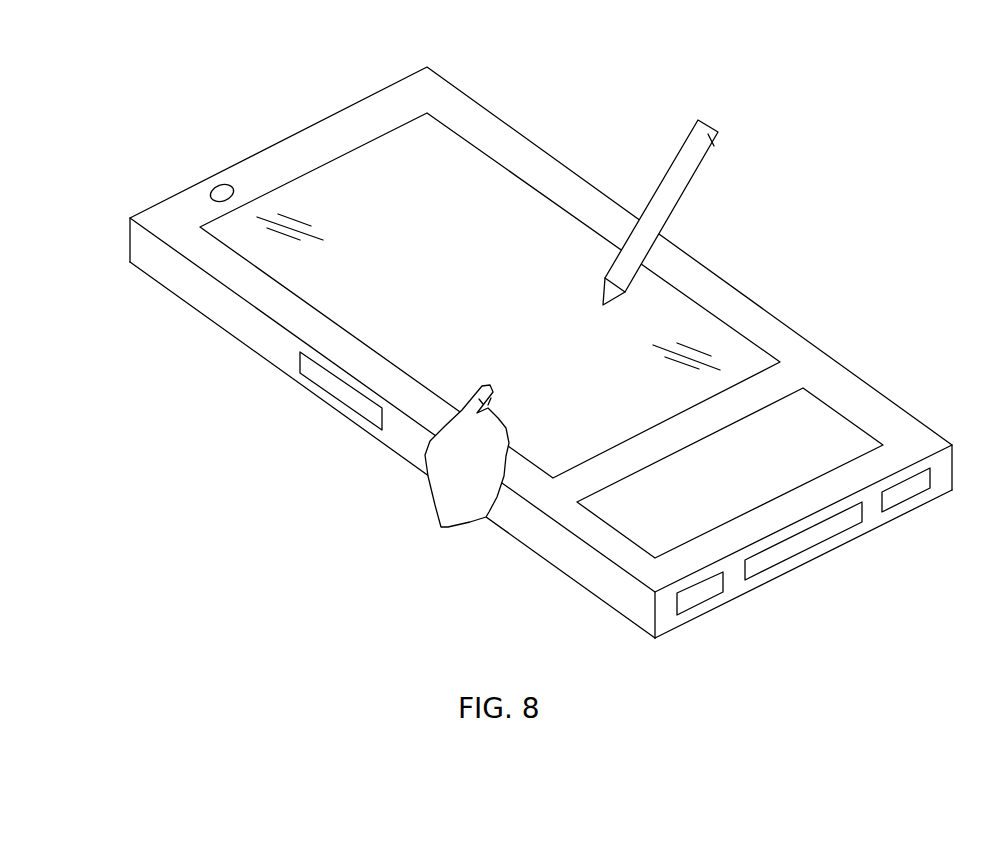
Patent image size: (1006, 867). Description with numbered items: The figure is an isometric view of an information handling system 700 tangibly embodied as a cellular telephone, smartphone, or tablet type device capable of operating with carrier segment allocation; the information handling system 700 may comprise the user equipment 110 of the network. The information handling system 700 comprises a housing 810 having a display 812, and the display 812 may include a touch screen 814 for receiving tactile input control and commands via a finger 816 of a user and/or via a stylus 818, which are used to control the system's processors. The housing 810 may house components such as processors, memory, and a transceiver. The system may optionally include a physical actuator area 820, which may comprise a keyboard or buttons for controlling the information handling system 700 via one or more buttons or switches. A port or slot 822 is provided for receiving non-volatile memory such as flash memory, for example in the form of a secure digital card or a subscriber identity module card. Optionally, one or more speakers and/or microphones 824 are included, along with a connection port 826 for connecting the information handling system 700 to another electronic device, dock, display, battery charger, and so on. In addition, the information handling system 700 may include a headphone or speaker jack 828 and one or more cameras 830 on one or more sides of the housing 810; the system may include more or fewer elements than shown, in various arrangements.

The user equipment 110 is at (556, 92).
The information handling system 700 is at (522, 338).
The housing 810 is at (372, 93).
The display 812 is at (428, 172).
The touch screen 814 is at (514, 292).
The finger 816 is at (483, 386).
The stylus 818 is at (679, 152).
The physical actuator area 820 is at (813, 433).
The port or slot 822 is at (320, 387).
The speakers and/or microphones 824 is at (703, 603).
The connection port 826 is at (817, 548).
The headphone or speaker jack 828 is at (153, 200).
The camera 830 is at (215, 186).